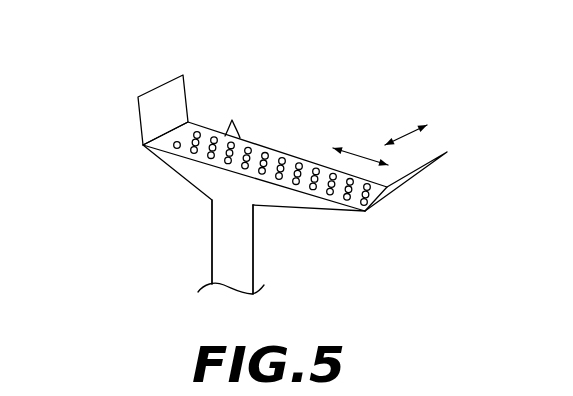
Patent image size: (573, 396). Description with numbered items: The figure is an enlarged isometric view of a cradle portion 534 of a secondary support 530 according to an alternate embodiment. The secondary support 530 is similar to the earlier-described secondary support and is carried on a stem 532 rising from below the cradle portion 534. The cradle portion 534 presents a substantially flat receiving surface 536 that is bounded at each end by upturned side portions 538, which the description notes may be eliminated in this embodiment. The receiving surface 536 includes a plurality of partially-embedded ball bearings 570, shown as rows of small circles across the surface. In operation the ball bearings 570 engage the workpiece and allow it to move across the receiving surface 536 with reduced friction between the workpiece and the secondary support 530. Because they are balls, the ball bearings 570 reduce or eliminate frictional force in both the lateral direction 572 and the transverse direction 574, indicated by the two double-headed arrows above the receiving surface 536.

The secondary support 530 is at (116, 60).
The support stem 532 is at (253, 255).
The cradle portion 534 is at (122, 187).
The receiving surface 536 is at (193, 129).
The side portions 538 is at (140, 124).
The ball bearings 570 is at (235, 121).
The lateral direction 572 is at (358, 153).
The transverse direction 574 is at (407, 136).